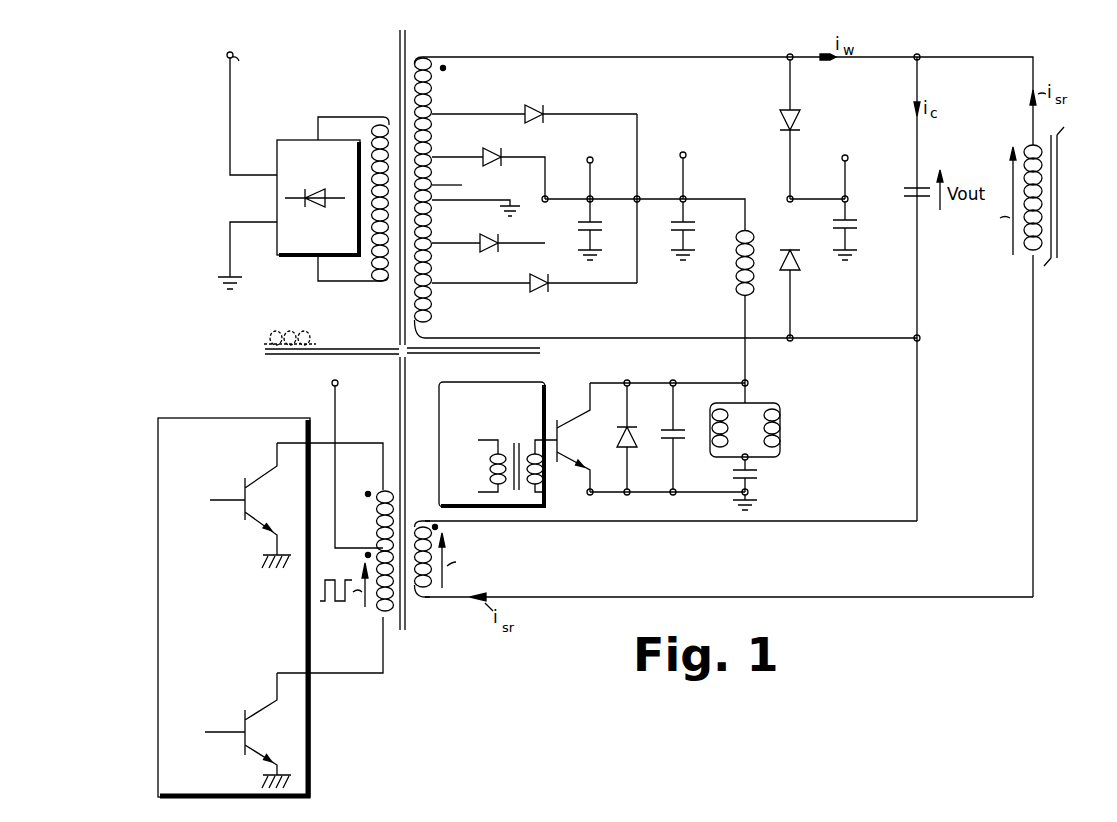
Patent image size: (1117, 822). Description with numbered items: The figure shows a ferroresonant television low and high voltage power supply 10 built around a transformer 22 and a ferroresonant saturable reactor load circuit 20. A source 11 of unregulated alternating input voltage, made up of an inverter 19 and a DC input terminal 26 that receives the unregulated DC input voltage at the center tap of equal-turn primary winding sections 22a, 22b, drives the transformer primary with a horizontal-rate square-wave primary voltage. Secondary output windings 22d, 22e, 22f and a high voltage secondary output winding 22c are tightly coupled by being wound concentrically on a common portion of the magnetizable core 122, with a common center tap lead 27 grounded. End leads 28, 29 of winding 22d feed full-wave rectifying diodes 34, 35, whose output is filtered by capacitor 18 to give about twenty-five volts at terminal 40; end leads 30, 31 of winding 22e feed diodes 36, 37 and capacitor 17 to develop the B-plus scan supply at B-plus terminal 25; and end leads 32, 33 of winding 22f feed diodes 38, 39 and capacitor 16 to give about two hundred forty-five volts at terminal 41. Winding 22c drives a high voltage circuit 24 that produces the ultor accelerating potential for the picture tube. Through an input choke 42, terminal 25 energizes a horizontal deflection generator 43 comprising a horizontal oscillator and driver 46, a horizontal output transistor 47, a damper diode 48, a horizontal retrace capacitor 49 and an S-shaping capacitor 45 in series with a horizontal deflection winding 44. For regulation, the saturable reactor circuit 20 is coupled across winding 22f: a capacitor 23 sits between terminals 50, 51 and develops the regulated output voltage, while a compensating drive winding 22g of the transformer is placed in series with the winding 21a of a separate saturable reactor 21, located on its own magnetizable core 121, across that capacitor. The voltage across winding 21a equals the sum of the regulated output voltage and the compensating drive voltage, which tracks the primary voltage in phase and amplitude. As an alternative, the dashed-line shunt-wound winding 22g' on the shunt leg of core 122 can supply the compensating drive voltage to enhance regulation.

The ferroresonant television low and high voltage power supply 10 is at (232, 346).
The source of unregulated alternating input voltage 11 is at (372, 713).
The capacitor 16 is at (838, 225).
The capacitor 17 is at (669, 224).
The capacitor 18 is at (607, 226).
The inverter 19 is at (214, 418).
The ferroresonant saturable reactor load circuit 20 is at (970, 256).
The saturable reactor 21 is at (1088, 214).
The reactor winding 21a is at (1031, 258).
The transformer 22 is at (393, 54).
The primary winding section 22a is at (380, 622).
The primary winding section 22b is at (378, 525).
The high voltage secondary output winding 22c is at (389, 118).
The secondary output winding 22d is at (466, 189).
The secondary output winding 22e is at (432, 133).
The secondary output winding 22f is at (432, 86).
The compensating drive winding 22g is at (449, 575).
The shunt-wound compensating drive winding 22g' is at (290, 321).
The capacitor 23 is at (905, 188).
The high voltage circuit 24 is at (298, 140).
The B+ terminal 25 is at (688, 196).
The DC input terminal 26 is at (338, 386).
The common center tap lead 27 is at (447, 203).
The end lead 28 is at (457, 171).
The end lead 29 is at (474, 243).
The end lead 30 is at (464, 114).
The end lead 31 is at (440, 284).
The end lead 32 is at (437, 60).
The end lead 33 is at (458, 338).
The full-wave rectifying diode 34 is at (504, 160).
The full-wave rectifying diode 35 is at (499, 246).
The full-wave rectifying diode 36 is at (533, 106).
The full-wave rectifying diode 37 is at (583, 295).
The full-wave rectifying diode 38 is at (798, 120).
The full-wave rectifying diode 39 is at (800, 270).
The terminal 40 is at (581, 191).
The terminal 41 is at (843, 196).
The input choke 42 is at (735, 280).
The horizontal deflection generator 43 is at (674, 373).
The horizontal deflection winding 44 is at (783, 410).
The S-shaping or trace capacitor 45 is at (757, 474).
The horizontal oscillator and driver 46 is at (535, 382).
The horizontal output transistor 47 is at (567, 424).
The damper diode 48 is at (631, 425).
The horizontal retrace capacitor 49 is at (684, 439).
The terminal 50 is at (917, 57).
The terminal 51 is at (920, 335).
The magnetizable core 121 is at (1057, 153).
The magnetizable core 122 is at (395, 344).